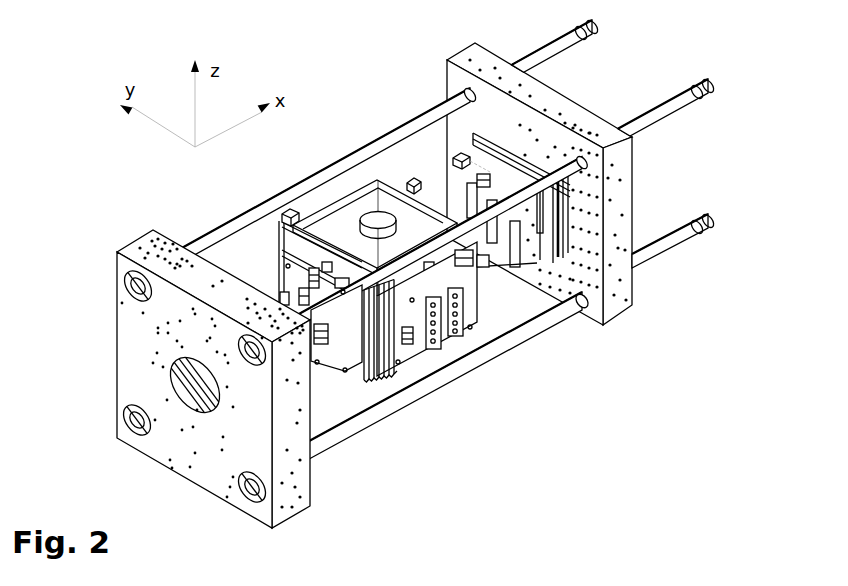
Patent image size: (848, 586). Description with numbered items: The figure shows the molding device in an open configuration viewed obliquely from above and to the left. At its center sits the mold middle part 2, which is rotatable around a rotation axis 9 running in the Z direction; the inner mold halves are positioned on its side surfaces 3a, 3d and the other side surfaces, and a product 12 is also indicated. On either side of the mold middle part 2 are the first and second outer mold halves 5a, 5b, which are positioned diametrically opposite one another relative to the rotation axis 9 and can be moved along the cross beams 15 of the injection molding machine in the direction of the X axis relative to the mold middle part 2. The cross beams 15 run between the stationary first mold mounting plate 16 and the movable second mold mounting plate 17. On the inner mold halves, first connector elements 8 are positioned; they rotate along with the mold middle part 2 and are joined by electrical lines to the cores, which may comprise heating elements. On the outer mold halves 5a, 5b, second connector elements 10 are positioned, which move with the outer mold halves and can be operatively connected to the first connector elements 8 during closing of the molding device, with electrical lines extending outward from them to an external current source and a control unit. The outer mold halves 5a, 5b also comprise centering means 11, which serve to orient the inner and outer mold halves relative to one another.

The mold middle part 2 is at (254, 242).
The side surface 3a is at (632, 312).
The side surface 3d is at (613, 420).
The first outer mold half 5a is at (683, 215).
The second outer mold half 5b is at (368, 418).
The first connector elements 8 is at (236, 126).
The rotation axis 9 is at (390, 140).
The second connector elements 10 is at (435, 99).
The centering means 11 is at (501, 289).
The product 12 is at (558, 424).
The cross beam 15 is at (545, 270).
The first mold mounting plate 16 is at (177, 379).
The second mold mounting plate 17 is at (628, 184).